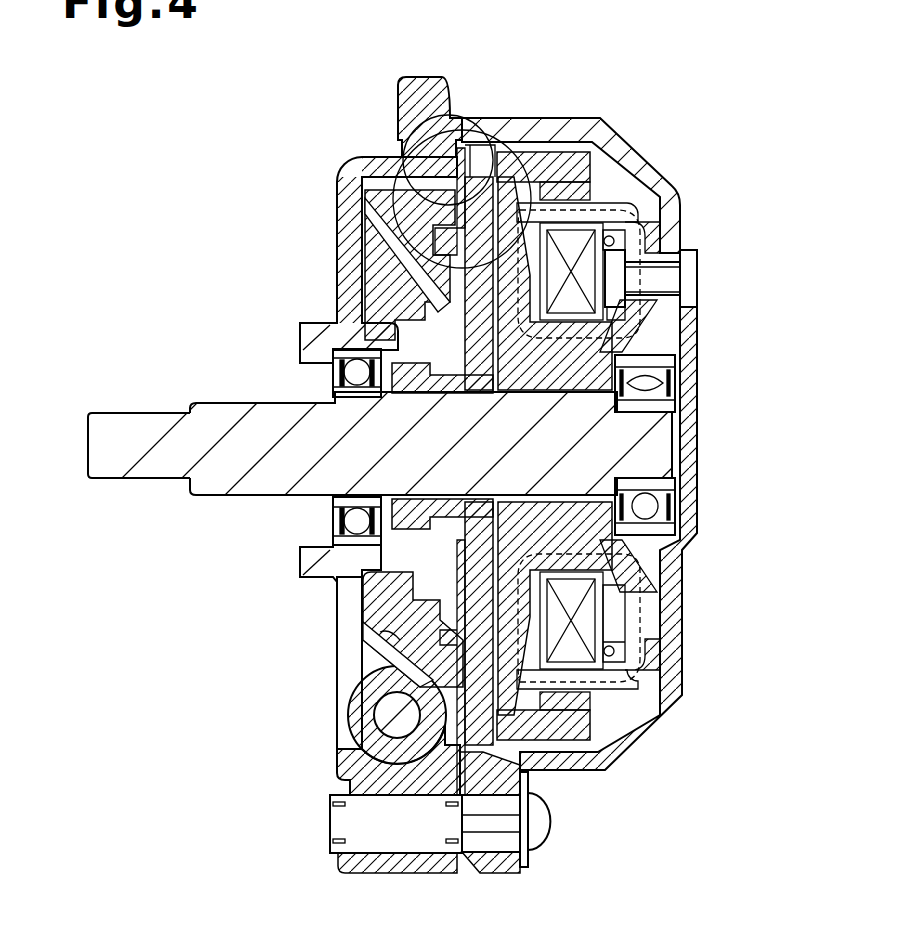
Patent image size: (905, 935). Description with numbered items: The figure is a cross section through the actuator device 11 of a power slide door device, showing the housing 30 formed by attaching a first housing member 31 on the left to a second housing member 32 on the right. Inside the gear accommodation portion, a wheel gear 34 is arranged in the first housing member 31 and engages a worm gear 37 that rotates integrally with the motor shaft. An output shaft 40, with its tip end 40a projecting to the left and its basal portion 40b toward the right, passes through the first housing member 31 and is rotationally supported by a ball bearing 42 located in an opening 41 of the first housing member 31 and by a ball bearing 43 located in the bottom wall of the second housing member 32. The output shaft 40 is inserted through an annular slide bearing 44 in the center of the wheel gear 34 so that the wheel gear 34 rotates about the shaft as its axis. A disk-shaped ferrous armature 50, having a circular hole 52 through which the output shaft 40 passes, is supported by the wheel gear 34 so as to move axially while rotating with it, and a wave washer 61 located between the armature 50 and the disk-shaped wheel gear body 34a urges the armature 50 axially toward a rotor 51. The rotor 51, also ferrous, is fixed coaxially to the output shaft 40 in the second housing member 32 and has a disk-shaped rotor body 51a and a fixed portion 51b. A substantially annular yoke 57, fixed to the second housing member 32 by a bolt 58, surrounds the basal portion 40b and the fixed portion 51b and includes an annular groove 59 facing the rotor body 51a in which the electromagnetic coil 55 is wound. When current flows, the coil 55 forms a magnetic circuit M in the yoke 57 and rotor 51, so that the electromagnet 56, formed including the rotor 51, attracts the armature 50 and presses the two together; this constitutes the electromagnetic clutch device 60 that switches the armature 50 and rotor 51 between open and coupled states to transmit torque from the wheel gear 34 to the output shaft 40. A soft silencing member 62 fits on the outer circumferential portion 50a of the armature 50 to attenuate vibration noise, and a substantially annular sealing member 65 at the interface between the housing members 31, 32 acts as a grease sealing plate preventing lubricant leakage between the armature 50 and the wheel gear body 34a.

The actuator device 11 is at (101, 116).
The housing 30 is at (345, 180).
The sealing member 65 is at (405, 157).
The silencing member 62 is at (490, 140).
The outer circumferential portion 50a is at (505, 120).
The annular groove 59 is at (600, 193).
The yoke 57 is at (655, 205).
The bolt 58 is at (700, 268).
The rotor body 51a is at (440, 220).
The armature 50 is at (340, 262).
The output shaft 40 is at (190, 403).
The opening 41 is at (330, 380).
The tip end 40a is at (105, 447).
The slide bearing 44 is at (435, 395).
The rotor 51 is at (505, 395).
The fixed portion 51b is at (630, 387).
The basal portion 40b is at (675, 445).
The ball bearing 43 is at (680, 502).
The circular hole 52 is at (485, 498).
The ball bearing 42 is at (335, 520).
The wave washer 61 is at (335, 560).
The wheel gear body 34a is at (452, 586).
The electromagnetic clutch device 60 is at (430, 598).
The wheel gear 34 is at (355, 653).
The first housing member 31 is at (345, 677).
The worm gear 37 is at (352, 716).
The second housing member 32 is at (683, 590).
The electromagnet 56 is at (620, 702).
The electromagnetic coil 55 is at (590, 690).
The magnetic circuit M is at (676, 188).